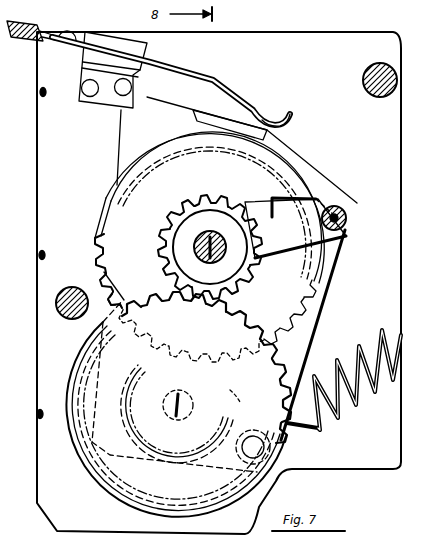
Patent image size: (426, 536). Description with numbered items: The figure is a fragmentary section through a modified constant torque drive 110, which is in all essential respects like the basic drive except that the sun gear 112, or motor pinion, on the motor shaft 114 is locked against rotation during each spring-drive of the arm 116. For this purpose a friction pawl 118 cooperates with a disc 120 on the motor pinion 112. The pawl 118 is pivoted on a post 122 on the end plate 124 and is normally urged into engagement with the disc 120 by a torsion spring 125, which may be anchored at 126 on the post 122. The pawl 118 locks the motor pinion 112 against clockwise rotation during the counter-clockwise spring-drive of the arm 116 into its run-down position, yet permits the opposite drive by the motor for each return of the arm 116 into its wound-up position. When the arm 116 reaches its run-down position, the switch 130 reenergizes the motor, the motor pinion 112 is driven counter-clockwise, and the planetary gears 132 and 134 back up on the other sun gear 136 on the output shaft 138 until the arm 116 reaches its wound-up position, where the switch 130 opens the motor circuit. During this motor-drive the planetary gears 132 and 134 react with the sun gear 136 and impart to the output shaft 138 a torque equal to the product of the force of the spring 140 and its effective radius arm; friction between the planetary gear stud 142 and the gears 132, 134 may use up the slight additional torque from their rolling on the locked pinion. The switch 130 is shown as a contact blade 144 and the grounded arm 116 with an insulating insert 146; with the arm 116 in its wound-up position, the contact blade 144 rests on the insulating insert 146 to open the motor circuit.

The modified constant torque drive 110 is at (337, 57).
The sun gear 112 is at (163, 213).
The motor shaft 114 is at (217, 258).
The arm 116 is at (321, 319).
The friction pawl 118 is at (286, 242).
The disc 120 is at (182, 248).
The post 122 is at (347, 222).
The end plate 124 is at (370, 146).
The torsion spring 125 is at (283, 190).
The anchor 126 is at (344, 240).
The switch 130 is at (274, 108).
The planetary gear 132 is at (297, 362).
The planetary gear 134 is at (240, 400).
The sun gear 136 is at (110, 282).
The output shaft 138 is at (225, 233).
The spring 140 is at (361, 341).
The planetary gear stud 142 is at (175, 420).
The contact blade 144 is at (230, 88).
The insulating insert 146 is at (218, 100).